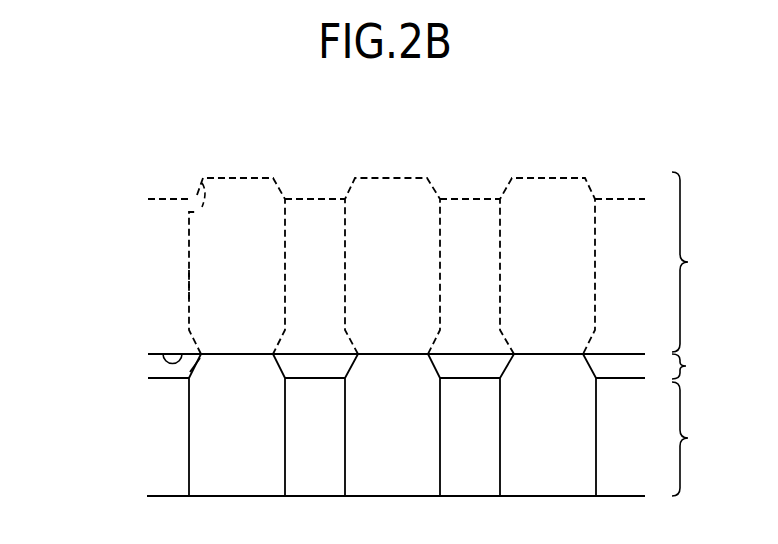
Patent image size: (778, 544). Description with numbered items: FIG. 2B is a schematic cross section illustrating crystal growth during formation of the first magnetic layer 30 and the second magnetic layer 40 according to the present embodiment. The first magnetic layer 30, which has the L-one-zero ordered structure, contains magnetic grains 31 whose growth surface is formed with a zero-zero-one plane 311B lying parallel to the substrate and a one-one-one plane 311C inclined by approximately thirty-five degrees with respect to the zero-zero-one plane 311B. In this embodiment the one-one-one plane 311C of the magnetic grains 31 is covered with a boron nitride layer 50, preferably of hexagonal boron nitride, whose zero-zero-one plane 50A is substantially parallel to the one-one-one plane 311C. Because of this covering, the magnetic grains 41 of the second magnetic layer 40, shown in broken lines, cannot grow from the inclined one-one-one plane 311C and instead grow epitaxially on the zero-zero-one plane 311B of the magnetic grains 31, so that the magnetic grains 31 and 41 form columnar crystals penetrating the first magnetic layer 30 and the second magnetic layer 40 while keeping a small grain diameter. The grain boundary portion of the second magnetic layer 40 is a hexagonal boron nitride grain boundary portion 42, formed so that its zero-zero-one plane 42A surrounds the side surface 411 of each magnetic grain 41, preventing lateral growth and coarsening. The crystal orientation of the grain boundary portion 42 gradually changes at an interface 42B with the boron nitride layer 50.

The second magnetic layer 40 is at (392, 252).
The magnetic grains 41 is at (203, 241).
The hexagonal boron nitride grain boundary portion 42 is at (168, 249).
The (001) plane 42A is at (198, 187).
The interface 42B is at (183, 354).
The side surface 411 is at (189, 288).
The boron nitride layer 50 is at (393, 382).
The (001) plane 50A is at (203, 355).
The first magnetic layer 30 is at (385, 384).
The magnetic grains 31 is at (204, 448).
The (001) plane 311B is at (233, 354).
The (111) plane 311C is at (200, 360).